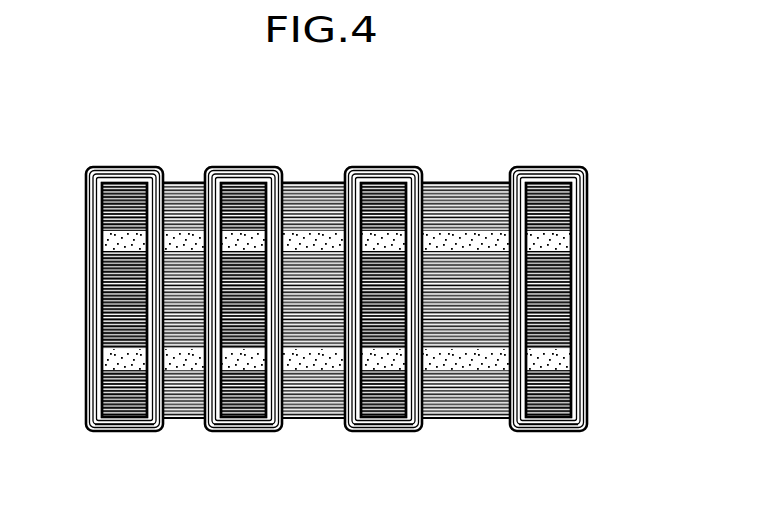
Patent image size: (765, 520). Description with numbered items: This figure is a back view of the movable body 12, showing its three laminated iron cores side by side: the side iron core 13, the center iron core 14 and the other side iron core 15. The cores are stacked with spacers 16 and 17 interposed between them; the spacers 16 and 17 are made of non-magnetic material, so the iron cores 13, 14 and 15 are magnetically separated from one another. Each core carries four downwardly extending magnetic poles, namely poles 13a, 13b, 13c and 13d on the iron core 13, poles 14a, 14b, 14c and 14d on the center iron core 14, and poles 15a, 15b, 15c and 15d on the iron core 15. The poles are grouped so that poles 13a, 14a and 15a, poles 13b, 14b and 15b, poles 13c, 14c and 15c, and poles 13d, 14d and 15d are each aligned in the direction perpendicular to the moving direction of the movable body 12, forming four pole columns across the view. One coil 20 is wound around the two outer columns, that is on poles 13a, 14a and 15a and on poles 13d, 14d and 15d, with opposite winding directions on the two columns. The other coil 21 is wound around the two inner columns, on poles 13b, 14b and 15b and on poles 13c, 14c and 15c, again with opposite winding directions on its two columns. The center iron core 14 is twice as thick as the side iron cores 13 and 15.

The movable body 12 is at (339, 292).
The iron core 13 is at (452, 202).
The magnetic pole 13a is at (131, 195).
The magnetic pole 13b is at (246, 195).
The magnetic pole 13c is at (386, 195).
The magnetic pole 13d is at (553, 195).
The center iron core 14 is at (455, 275).
The magnetic pole 14a is at (117, 318).
The magnetic pole 14b is at (244, 263).
The magnetic pole 14c is at (385, 337).
The magnetic pole 14d is at (550, 312).
The iron core 15 is at (462, 405).
The magnetic pole 15a is at (127, 407).
The magnetic pole 15b is at (246, 407).
The magnetic pole 15c is at (388, 407).
The magnetic pole 15d is at (556, 407).
The spacer 16 is at (120, 243).
The spacer 17 is at (118, 360).
The coil 20 is at (112, 426).
The coil 21 is at (231, 426).